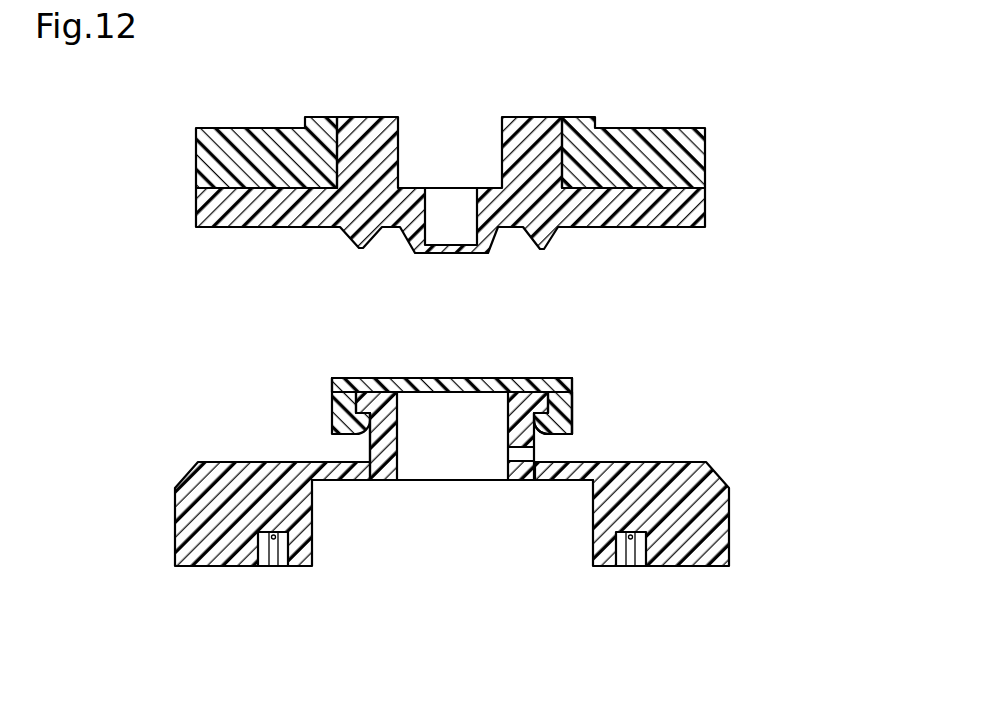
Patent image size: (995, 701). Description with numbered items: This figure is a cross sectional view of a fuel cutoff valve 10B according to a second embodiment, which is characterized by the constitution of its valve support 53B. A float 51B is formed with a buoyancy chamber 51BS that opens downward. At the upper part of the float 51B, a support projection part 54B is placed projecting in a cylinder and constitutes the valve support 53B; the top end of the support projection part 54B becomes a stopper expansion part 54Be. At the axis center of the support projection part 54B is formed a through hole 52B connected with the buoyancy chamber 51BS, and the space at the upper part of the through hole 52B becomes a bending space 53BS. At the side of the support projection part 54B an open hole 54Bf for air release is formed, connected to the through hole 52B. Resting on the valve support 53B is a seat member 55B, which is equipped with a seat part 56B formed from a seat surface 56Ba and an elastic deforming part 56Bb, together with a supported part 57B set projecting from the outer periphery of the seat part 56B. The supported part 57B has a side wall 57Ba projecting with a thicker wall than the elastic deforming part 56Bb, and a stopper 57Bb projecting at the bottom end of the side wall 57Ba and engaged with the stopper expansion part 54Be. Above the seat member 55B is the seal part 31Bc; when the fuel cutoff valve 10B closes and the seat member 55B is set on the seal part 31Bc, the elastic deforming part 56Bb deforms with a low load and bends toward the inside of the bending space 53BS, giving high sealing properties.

The fuel cutoff valve 10B is at (890, 130).
The seal part 31Bc is at (417, 253).
The float 51B is at (712, 466).
The buoyancy chamber 51BS is at (518, 530).
The through hole 52B is at (398, 466).
The valve support 53B is at (231, 379).
The bending space 53BS is at (370, 418).
The support projection part 54B is at (370, 448).
The stopper expansion part 54Be is at (353, 381).
The open hole 54Bf is at (507, 452).
The seat member 55B is at (747, 334).
The seat part 56B is at (684, 321).
The seat surface 56Ba is at (480, 377).
The elastic deforming part 56Bb is at (503, 378).
The supported part 57B is at (684, 389).
The side wall 57Ba is at (563, 400).
The stopper 57Bb is at (542, 421).